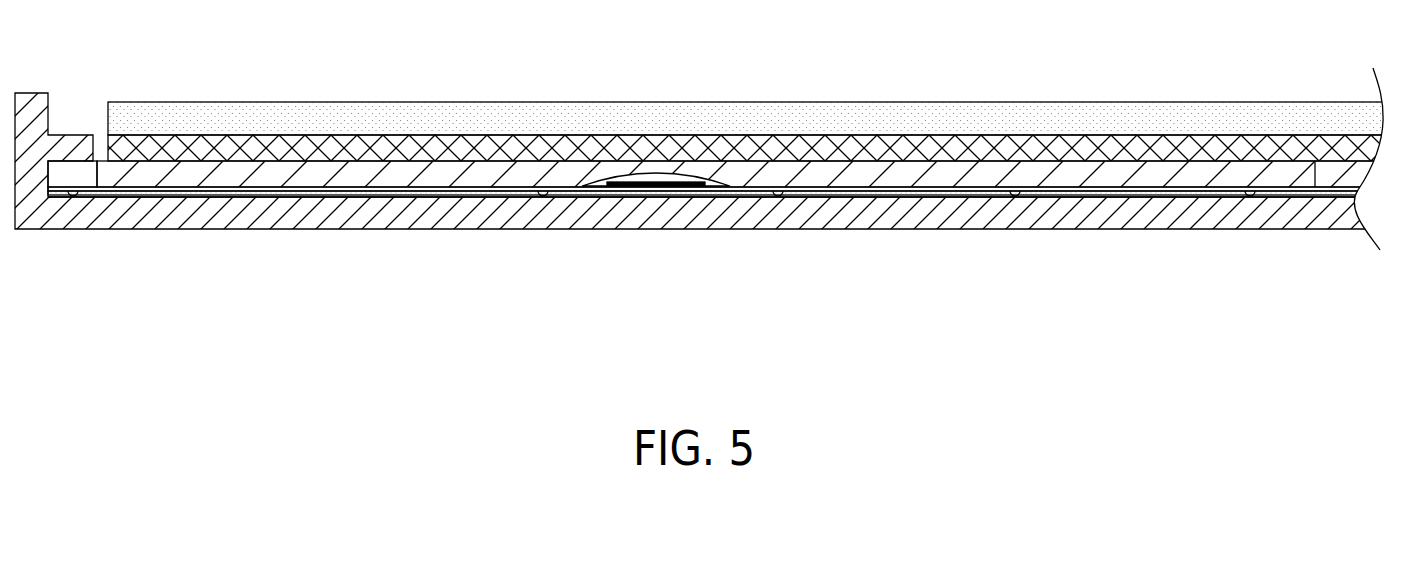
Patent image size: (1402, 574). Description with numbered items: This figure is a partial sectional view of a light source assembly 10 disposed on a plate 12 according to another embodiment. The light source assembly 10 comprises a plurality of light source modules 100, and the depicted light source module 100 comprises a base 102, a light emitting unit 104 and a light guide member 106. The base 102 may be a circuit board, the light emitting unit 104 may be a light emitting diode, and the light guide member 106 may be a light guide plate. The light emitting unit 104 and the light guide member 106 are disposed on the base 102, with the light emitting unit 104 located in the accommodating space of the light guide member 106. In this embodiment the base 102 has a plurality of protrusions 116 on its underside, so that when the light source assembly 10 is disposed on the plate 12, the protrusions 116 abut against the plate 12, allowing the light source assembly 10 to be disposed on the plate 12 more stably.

The light source assembly 10 is at (1003, 161).
The plate 12 is at (218, 230).
The light source module 100 is at (662, 252).
The base 102 is at (577, 187).
The light emitting unit 104 is at (656, 233).
The light guide member 106 is at (748, 172).
The protrusions 116 is at (310, 195).